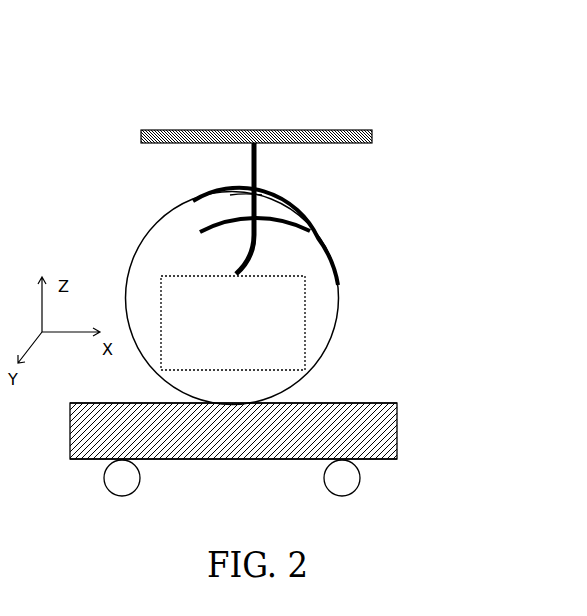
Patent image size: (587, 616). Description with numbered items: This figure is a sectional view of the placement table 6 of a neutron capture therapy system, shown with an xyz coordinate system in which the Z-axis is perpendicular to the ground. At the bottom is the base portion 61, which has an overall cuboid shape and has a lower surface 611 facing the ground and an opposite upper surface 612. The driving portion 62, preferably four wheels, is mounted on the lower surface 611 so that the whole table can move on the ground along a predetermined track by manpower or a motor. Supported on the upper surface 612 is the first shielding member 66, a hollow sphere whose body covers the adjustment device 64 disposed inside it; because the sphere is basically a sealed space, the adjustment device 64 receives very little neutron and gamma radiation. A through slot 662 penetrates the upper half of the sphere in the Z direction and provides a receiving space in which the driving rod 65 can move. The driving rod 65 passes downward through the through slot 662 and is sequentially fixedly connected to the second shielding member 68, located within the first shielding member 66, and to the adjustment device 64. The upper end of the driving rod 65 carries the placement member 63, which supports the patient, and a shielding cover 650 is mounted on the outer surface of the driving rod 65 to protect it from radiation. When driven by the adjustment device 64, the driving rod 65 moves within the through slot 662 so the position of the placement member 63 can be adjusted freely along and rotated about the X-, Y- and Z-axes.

The placement table 6 is at (150, 36).
The placement member 63 is at (356, 129).
The shielding cover 650 is at (258, 171).
The through slot 662 is at (251, 191).
The first shielding member 66 is at (340, 282).
The driving rod 65 is at (258, 204).
The second shielding member 68 is at (310, 229).
The adjustment device 64 is at (292, 352).
The base portion 61 is at (397, 418).
The upper surface 612 is at (353, 403).
The lower surface 611 is at (397, 457).
The driving portion 62 is at (360, 480).